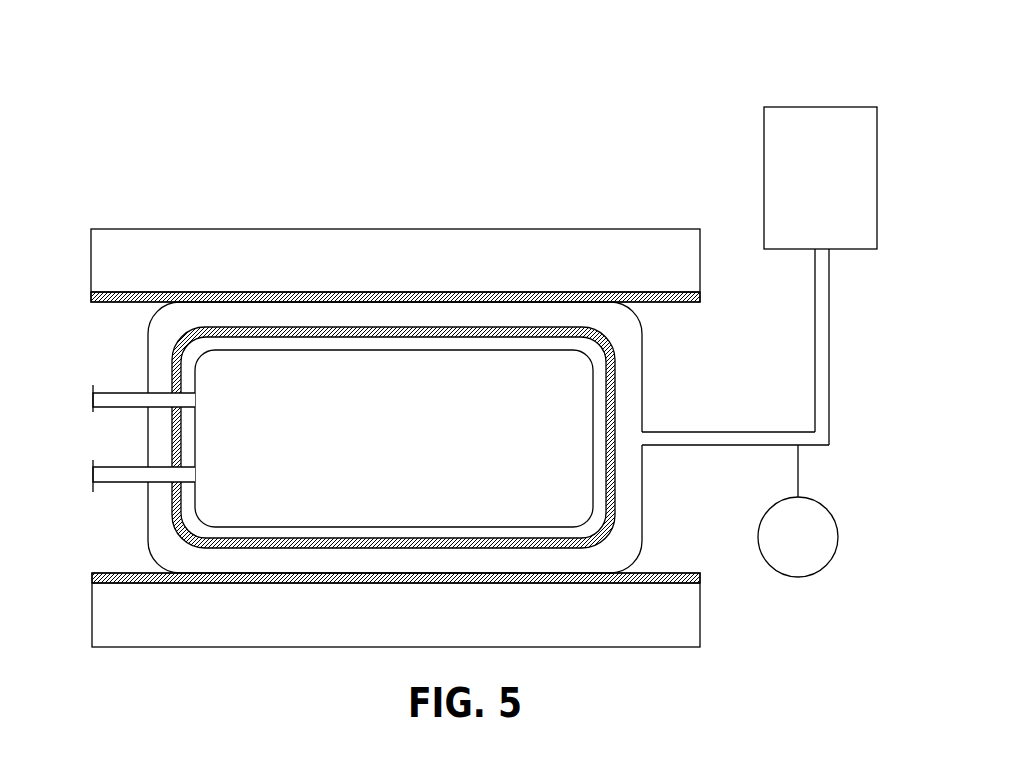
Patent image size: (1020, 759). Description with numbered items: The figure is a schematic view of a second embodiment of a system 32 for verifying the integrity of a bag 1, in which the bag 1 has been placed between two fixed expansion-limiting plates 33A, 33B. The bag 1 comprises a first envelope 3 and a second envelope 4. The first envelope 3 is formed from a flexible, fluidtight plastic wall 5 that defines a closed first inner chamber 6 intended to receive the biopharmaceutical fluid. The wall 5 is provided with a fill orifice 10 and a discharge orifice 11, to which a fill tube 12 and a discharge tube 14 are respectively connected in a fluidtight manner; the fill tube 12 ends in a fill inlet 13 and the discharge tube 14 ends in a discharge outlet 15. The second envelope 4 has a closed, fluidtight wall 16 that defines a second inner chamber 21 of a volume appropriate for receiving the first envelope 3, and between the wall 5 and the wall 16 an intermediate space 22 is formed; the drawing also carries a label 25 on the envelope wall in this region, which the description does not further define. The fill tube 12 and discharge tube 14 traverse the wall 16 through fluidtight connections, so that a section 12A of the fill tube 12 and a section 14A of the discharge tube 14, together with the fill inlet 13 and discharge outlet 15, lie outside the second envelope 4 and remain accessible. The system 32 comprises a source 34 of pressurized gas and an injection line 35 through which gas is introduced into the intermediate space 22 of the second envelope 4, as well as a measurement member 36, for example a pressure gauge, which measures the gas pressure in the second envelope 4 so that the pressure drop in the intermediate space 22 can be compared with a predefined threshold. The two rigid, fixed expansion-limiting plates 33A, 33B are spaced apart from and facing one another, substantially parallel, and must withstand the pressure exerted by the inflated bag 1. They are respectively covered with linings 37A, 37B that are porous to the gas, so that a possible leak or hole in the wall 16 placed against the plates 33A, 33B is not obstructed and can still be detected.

The bag 1 is at (703, 311).
The first envelope 3 is at (443, 346).
The second envelope 4 is at (427, 504).
The wall 5 is at (443, 346).
The first inner chamber 6 is at (441, 373).
The fill orifice 10 is at (201, 399).
The discharge orifice 11 is at (201, 477).
The fill tube 12 is at (121, 377).
The section of fill tube 12A is at (139, 362).
The fill inlet 13 is at (121, 362).
The discharge tube 14 is at (121, 502).
The section of discharge tube 14A is at (140, 512).
The discharge outlet 15 is at (121, 512).
The wall 16 is at (427, 504).
The second inner chamber 21 is at (602, 558).
The intermediate space 22 is at (609, 424).
The gas permeable layer 25 is at (438, 433).
The system 32 is at (698, 104).
The expansion-limiting plate 33A is at (411, 233).
The expansion-limiting plate 33B is at (421, 640).
The source of pressurized gas 34 is at (820, 178).
The injection line 35 is at (820, 310).
The measurement member 36 is at (807, 557).
The lining 37A is at (672, 292).
The lining 37B is at (684, 584).